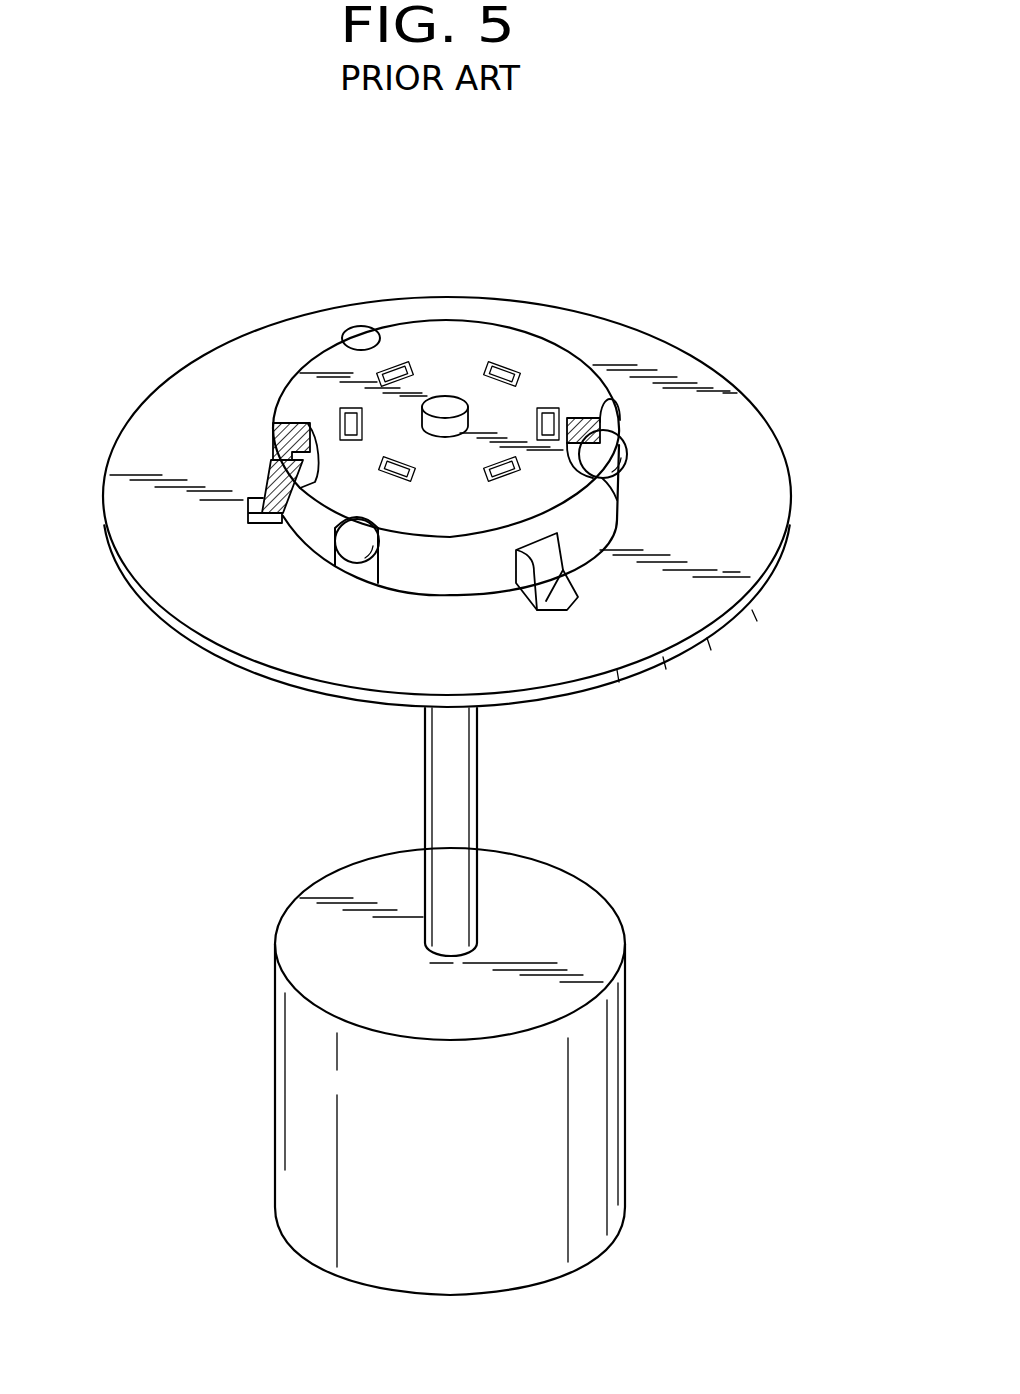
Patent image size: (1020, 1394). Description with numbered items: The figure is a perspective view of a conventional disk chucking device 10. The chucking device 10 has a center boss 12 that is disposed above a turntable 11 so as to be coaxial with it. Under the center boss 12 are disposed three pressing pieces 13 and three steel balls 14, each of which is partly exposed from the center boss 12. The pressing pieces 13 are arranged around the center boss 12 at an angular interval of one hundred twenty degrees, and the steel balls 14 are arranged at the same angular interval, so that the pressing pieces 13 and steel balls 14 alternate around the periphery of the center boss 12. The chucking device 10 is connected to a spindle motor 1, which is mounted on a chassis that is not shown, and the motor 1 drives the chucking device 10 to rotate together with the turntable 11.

The spindle motor 1 is at (573, 910).
The chucking device 10 is at (521, 259).
The turntable 11 is at (295, 650).
The center boss 12 is at (557, 358).
The pressing pieces 13 is at (270, 480).
The steel balls 14 is at (355, 338).